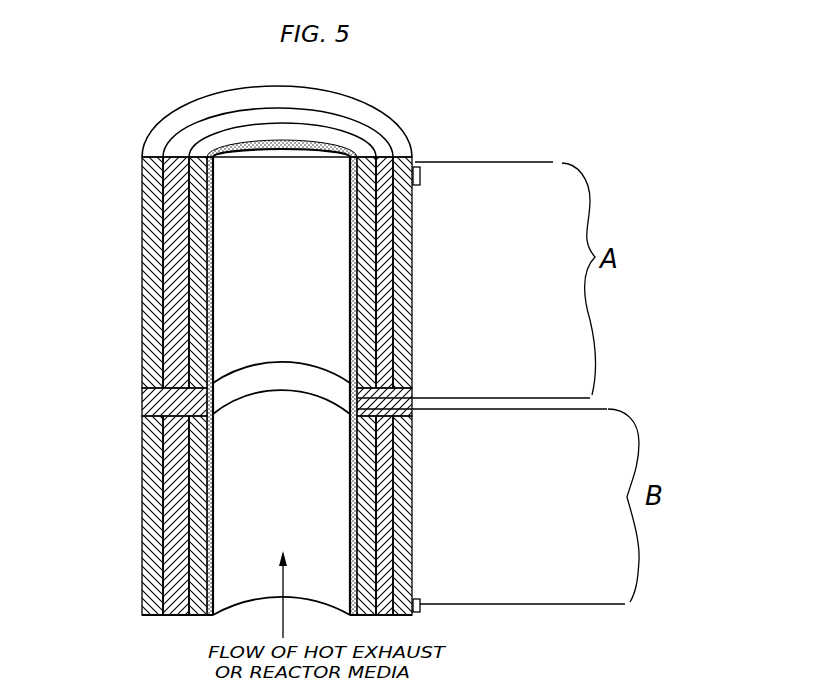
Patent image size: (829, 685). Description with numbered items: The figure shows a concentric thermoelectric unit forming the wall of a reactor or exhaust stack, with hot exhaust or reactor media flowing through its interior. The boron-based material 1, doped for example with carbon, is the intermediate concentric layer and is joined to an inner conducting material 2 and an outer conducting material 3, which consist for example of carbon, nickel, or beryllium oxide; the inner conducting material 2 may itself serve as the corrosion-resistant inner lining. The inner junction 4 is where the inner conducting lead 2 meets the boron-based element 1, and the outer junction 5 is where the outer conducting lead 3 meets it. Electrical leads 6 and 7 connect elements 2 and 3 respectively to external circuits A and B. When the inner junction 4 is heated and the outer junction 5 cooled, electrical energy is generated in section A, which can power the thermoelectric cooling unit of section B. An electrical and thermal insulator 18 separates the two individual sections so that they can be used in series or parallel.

The boron-based material 1 is at (278, 369).
The inner conducting material 2 is at (282, 377).
The outer conducting material 3 is at (277, 350).
The inner junction 4 is at (188, 176).
The outer junction 5 is at (163, 228).
The electrical lead 6 is at (465, 162).
The electrical lead 7 is at (468, 398).
The electrical and thermal insulator 18 is at (148, 399).